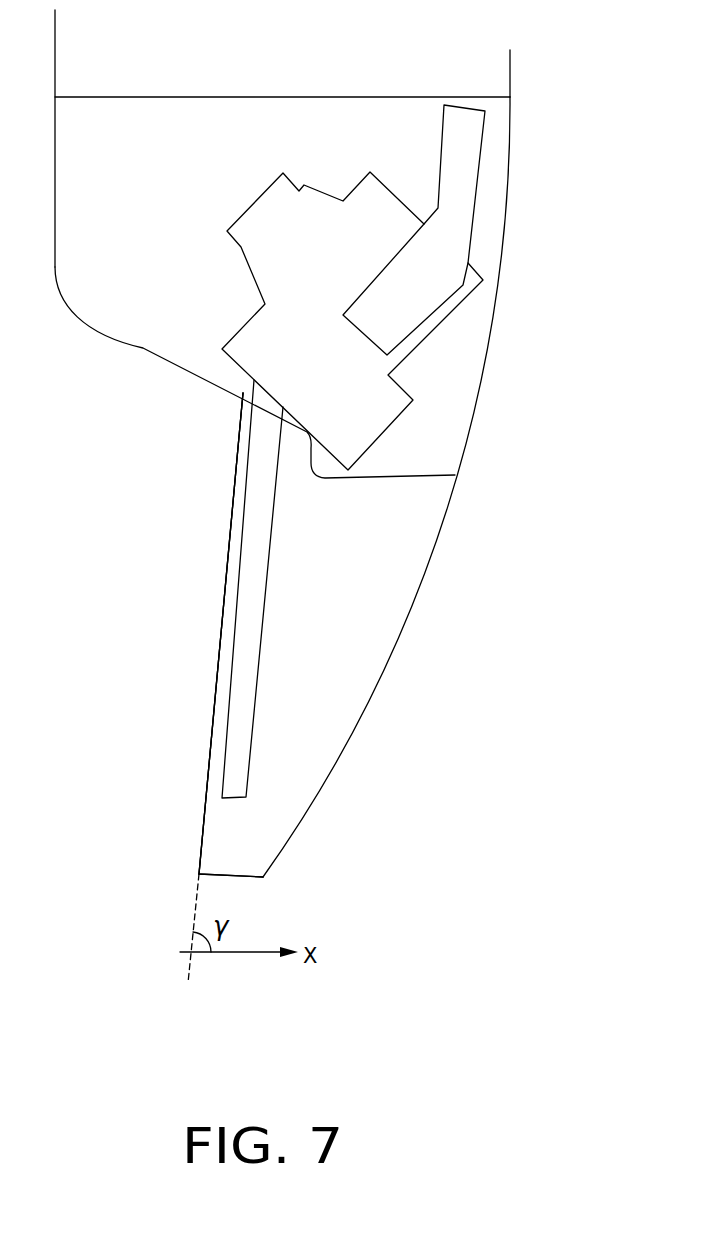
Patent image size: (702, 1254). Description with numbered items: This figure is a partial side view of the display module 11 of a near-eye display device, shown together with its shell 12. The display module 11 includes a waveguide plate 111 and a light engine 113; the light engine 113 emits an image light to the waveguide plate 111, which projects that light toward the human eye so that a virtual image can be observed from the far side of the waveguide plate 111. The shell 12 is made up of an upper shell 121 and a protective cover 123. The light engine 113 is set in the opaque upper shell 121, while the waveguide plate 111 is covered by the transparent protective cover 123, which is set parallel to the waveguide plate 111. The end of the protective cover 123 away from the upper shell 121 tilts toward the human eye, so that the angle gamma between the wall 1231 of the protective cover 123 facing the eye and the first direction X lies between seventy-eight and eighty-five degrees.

The display module 11 is at (546, 411).
The waveguide plate 111 is at (258, 546).
The light engine 113 is at (352, 397).
The shell 12 is at (108, 407).
The upper shell 121 is at (143, 348).
The protective cover 123 is at (228, 553).
The wall 1231 is at (186, 815).